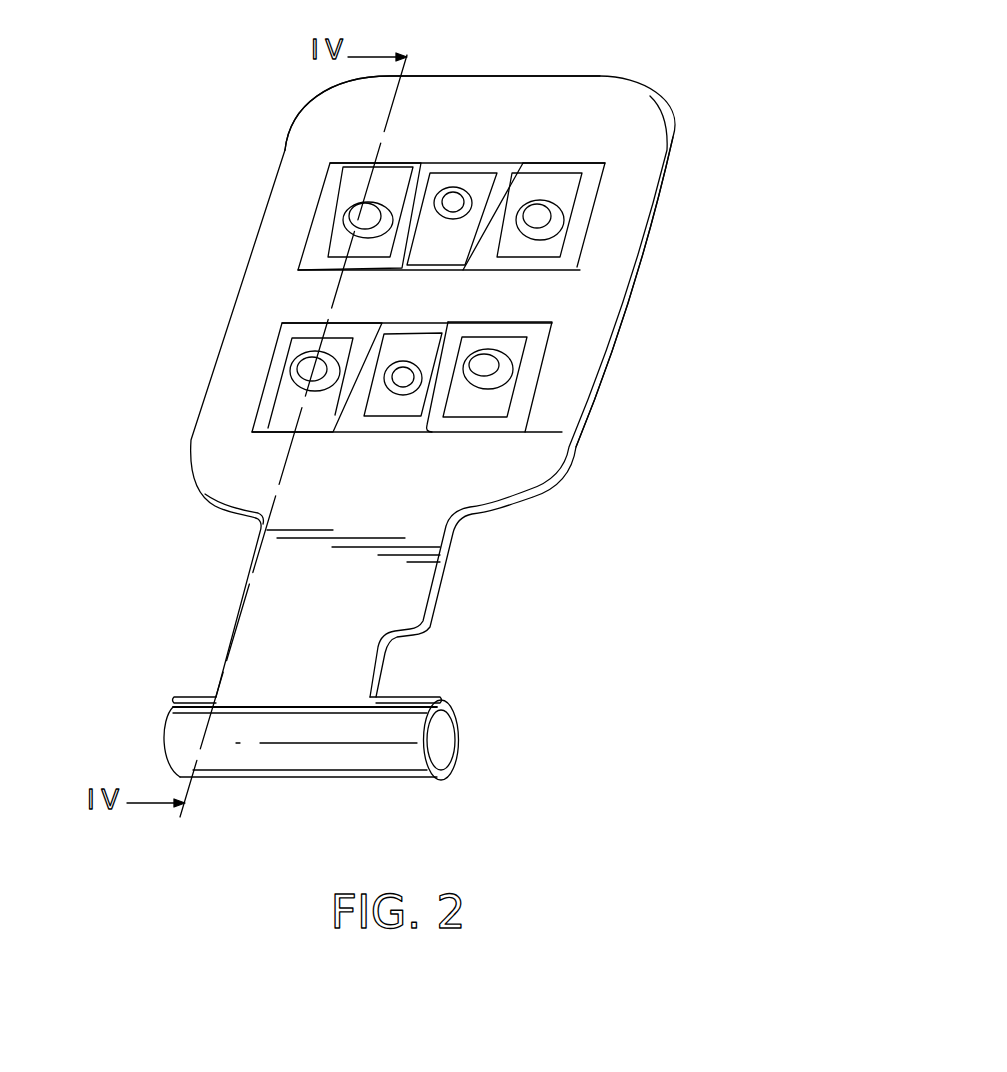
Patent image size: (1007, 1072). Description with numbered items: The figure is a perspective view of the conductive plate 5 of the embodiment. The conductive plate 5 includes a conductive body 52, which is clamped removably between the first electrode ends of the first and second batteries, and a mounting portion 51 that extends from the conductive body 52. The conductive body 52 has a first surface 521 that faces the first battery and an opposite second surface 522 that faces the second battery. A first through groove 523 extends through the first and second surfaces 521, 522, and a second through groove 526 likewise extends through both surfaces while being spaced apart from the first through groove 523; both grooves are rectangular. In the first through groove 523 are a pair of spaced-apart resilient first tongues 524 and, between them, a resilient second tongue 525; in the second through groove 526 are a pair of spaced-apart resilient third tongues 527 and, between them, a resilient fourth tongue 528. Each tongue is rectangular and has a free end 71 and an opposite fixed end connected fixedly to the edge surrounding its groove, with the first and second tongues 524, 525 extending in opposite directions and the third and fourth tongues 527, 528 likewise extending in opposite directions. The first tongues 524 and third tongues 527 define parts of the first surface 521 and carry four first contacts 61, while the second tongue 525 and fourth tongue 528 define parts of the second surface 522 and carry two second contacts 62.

The conductive plate 5 is at (426, 395).
The mounting portion 51 is at (166, 737).
The conductive body 52 is at (253, 247).
The first surface 521 is at (328, 113).
The second surface 522 is at (632, 303).
The first through groove 523 is at (322, 186).
The first tongue 524 is at (391, 177).
The second tongue 525 is at (442, 179).
The second through groove 526 is at (260, 376).
The third tongue 527 is at (296, 412).
The fourth tongue 528 is at (405, 403).
The first contact 61 is at (357, 220).
The second contact 62 is at (487, 184).
The free end 71 is at (457, 203).